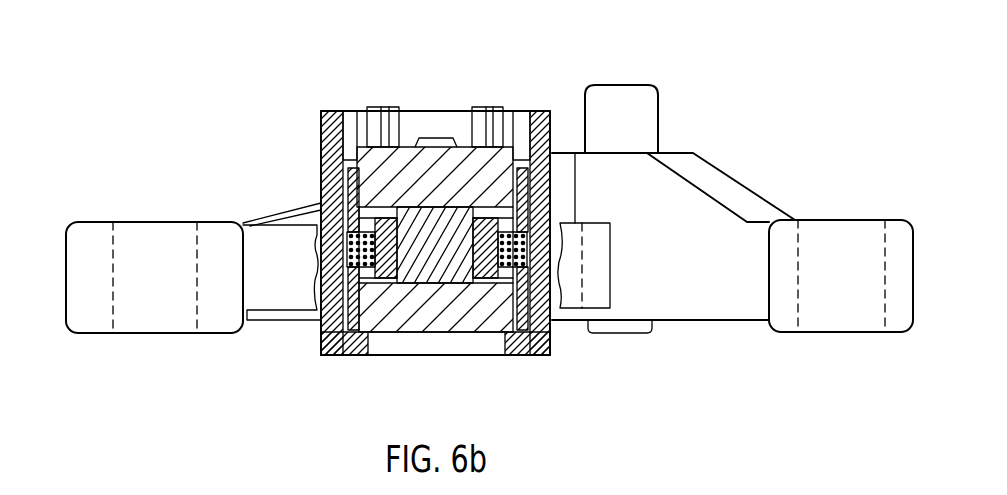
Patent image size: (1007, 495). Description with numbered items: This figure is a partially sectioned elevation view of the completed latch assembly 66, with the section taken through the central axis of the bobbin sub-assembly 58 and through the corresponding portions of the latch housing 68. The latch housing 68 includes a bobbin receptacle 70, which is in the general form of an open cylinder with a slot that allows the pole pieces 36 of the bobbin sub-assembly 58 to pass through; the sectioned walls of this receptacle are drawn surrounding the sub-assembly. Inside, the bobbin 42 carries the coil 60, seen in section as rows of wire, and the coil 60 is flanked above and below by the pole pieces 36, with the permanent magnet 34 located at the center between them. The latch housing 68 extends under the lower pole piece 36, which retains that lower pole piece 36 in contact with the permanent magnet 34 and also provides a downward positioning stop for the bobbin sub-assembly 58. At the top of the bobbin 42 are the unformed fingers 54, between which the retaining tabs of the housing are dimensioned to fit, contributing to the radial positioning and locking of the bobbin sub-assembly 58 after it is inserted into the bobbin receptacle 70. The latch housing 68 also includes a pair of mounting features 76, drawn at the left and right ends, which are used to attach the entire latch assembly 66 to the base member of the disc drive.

The bobbin sub-assembly 58 is at (362, 83).
The bobbin receptacle 70 is at (330, 146).
The unformed fingers 54 is at (488, 127).
The pole pieces 36 is at (497, 172).
The permanent magnet 34 is at (452, 268).
The coil 60 is at (348, 250).
The bobbin 42 is at (550, 203).
The latch housing 68 is at (700, 213).
The mounting features 76 is at (92, 235).
The latch assembly 66 is at (257, 363).